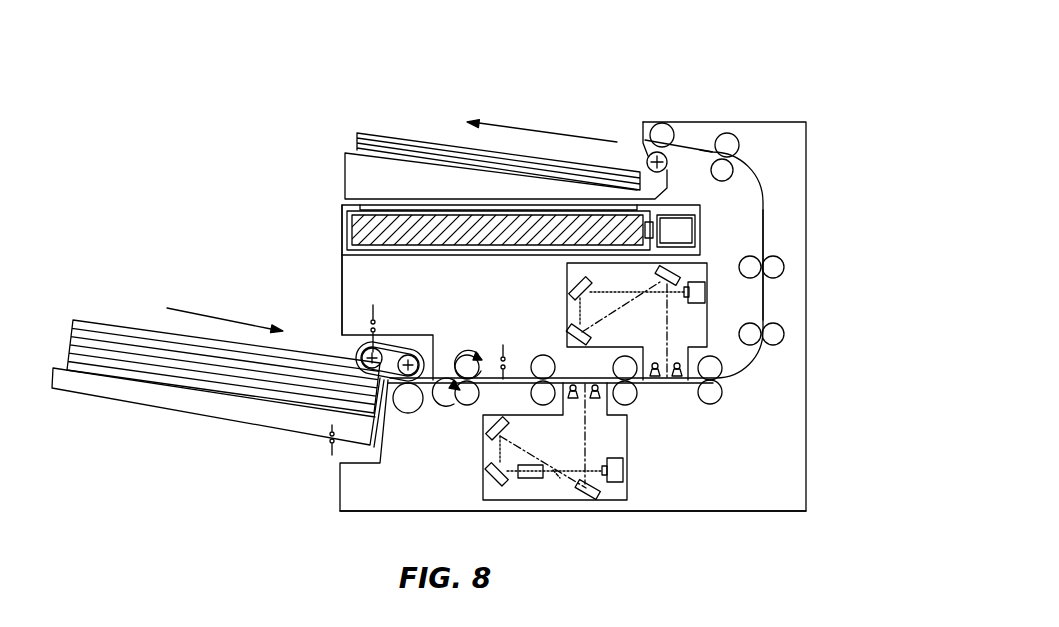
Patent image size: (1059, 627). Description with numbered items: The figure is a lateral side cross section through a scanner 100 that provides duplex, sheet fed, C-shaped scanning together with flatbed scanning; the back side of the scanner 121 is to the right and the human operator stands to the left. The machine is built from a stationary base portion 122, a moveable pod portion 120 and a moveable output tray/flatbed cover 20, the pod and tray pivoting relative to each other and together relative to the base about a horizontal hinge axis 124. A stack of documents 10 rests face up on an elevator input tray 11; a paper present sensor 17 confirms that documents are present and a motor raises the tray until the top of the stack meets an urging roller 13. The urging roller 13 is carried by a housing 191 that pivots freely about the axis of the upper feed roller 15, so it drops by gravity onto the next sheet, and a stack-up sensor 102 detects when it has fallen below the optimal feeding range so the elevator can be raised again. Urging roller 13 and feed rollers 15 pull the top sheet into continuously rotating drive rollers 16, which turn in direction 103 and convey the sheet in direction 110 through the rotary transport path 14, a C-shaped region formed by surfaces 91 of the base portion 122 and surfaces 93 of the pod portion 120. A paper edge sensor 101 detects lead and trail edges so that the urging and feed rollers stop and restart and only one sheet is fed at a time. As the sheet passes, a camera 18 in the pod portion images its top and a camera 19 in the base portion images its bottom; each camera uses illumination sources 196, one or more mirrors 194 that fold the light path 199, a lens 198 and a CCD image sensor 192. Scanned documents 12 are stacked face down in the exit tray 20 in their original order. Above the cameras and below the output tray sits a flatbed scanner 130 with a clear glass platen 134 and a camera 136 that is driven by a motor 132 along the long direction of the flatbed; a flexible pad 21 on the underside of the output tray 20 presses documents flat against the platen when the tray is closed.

The scanner 100 is at (770, 50).
The stack of documents 10 is at (128, 325).
The elevator input tray 11 is at (150, 400).
The scanned documents 12 is at (392, 130).
The urging roller 13 is at (355, 355).
The transport path 14 is at (768, 310).
The feed rollers 15 is at (411, 348).
The drive rollers 16 is at (668, 125).
The paper present sensor 17 is at (330, 446).
The camera 18 is at (567, 300).
The camera 19 is at (487, 470).
The output tray/flatbed cover 20 is at (347, 168).
The pad 21 is at (370, 205).
The surfaces of base portion 91 is at (757, 175).
The surfaces of pod portion 93 is at (752, 173).
The paper edge sensor 101 is at (505, 345).
The stack-up sensor 102 is at (375, 305).
The direction of rotation 103 is at (463, 340).
The direction of document transport 110 is at (548, 128).
The pod portion 120 is at (342, 295).
The back side of the scanner 121 is at (806, 425).
The base portion 122 is at (782, 512).
The horizontal hinge axis 124 is at (645, 148).
The flatbed scanner 130 is at (700, 222).
The motor 132 is at (680, 232).
The glass platen 134 is at (350, 214).
The camera 136 is at (352, 230).
The housing 191 is at (393, 345).
The CCD image sensor 192 is at (625, 470).
The mirrors 194 is at (490, 482).
The illumination sources 196 is at (600, 398).
The lens 198 is at (530, 480).
The light path 199 is at (553, 478).